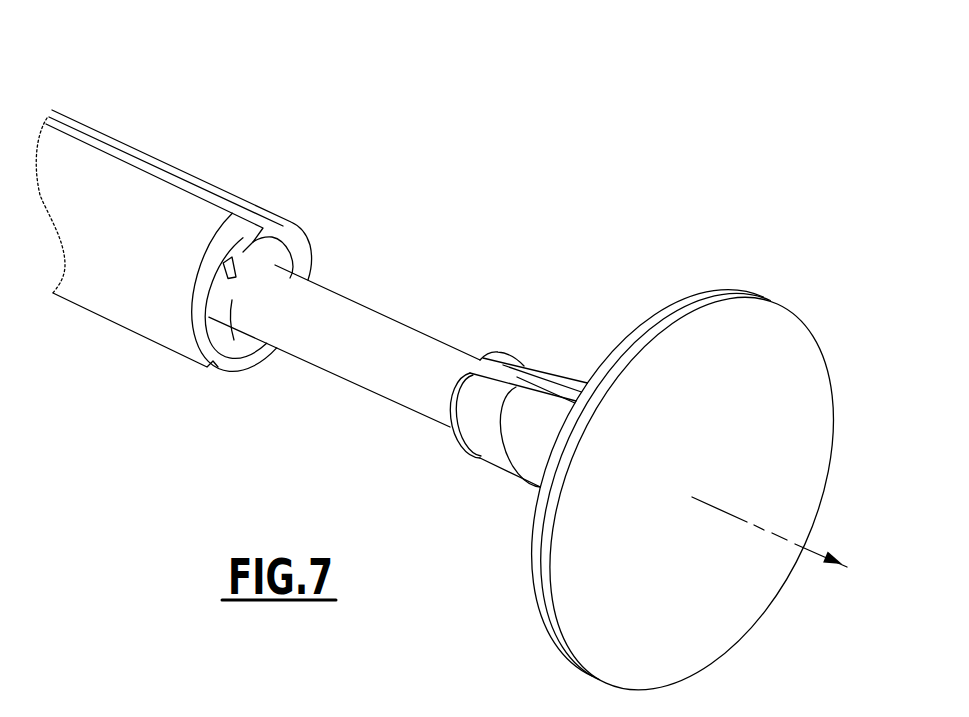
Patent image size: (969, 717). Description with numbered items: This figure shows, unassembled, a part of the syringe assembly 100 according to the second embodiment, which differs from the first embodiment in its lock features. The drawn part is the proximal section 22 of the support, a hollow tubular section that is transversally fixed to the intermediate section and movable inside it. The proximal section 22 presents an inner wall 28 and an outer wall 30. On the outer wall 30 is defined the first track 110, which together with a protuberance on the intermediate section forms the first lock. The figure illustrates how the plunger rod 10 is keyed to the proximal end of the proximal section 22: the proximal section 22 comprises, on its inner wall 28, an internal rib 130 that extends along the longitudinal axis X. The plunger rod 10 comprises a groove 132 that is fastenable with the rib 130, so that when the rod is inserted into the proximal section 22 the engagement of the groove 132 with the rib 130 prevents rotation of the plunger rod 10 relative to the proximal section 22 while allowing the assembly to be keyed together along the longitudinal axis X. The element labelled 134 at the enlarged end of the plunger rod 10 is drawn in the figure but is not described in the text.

The plunger rod 10 is at (360, 332).
The proximal section 22 is at (138, 270).
The inner wall 28 is at (233, 350).
The outer wall 30 is at (166, 341).
The syringe assembly 100 is at (366, 190).
The first track 110 is at (104, 126).
The internal rib 130 is at (234, 238).
The groove 132 is at (523, 380).
The disk 134 is at (733, 362).
The longitudinal axis X is at (769, 532).